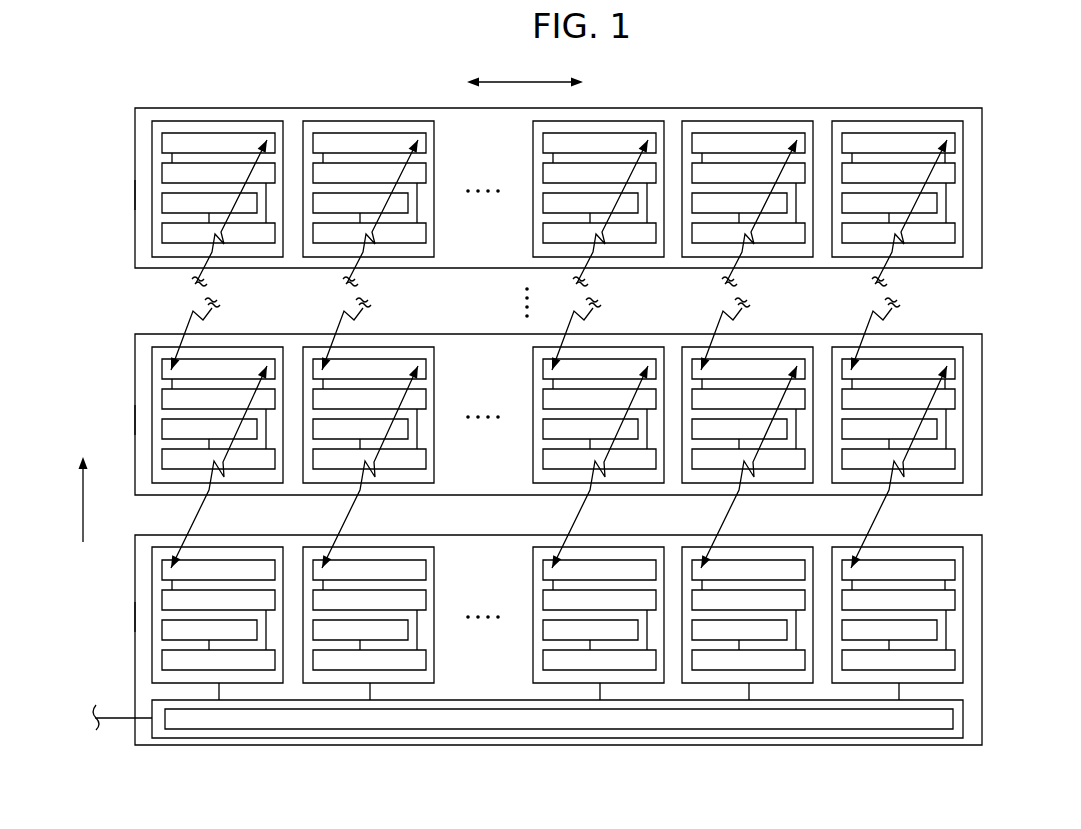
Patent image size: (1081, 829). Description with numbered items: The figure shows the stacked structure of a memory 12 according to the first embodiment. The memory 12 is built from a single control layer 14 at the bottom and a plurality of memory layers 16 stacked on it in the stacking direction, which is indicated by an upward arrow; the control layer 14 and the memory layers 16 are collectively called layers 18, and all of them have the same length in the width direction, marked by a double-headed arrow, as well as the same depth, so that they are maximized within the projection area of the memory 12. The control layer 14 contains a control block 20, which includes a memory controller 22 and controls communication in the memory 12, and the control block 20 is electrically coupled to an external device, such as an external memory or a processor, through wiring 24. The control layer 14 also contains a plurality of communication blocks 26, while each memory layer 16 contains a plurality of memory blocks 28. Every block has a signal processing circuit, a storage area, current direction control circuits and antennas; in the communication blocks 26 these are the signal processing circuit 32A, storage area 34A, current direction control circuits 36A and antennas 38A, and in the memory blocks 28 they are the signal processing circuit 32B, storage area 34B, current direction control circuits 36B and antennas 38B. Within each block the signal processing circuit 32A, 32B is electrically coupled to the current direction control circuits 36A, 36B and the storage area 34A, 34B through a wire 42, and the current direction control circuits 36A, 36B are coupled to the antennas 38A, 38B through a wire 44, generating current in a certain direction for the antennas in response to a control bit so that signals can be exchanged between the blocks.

The memory 12 is at (992, 86).
The control layer 14 is at (997, 543).
The memory layer 16 is at (997, 116).
The layers 18 is at (122, 196).
The control block 20 is at (965, 716).
The memory controller 22 is at (899, 730).
The wiring 24 is at (116, 722).
The communication block 26 is at (220, 547).
The memory block 28 is at (236, 121).
The signal processing circuit 32A is at (955, 667).
The signal processing circuit 32B is at (955, 240).
The storage area 34A is at (937, 630).
The storage area 34B is at (937, 203).
The current direction control circuit 36A is at (953, 599).
The current direction control circuit 36B is at (953, 172).
The antenna 38A is at (953, 569).
The antenna 38B is at (953, 142).
The wire 42 is at (947, 215).
The wire 44 is at (946, 157).